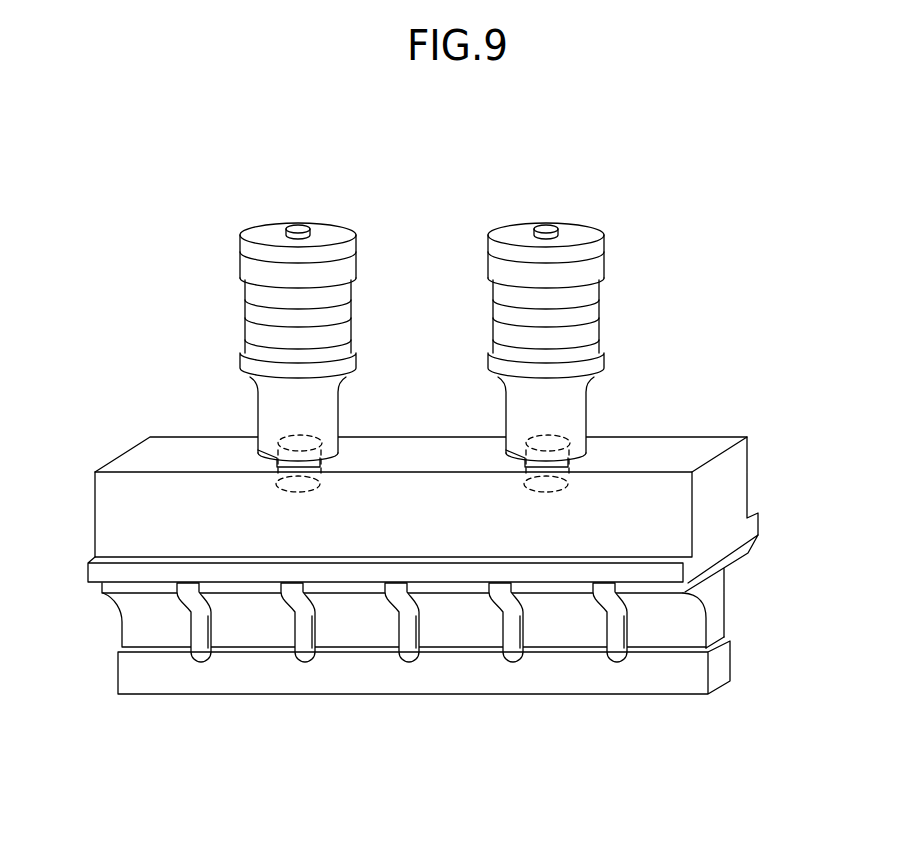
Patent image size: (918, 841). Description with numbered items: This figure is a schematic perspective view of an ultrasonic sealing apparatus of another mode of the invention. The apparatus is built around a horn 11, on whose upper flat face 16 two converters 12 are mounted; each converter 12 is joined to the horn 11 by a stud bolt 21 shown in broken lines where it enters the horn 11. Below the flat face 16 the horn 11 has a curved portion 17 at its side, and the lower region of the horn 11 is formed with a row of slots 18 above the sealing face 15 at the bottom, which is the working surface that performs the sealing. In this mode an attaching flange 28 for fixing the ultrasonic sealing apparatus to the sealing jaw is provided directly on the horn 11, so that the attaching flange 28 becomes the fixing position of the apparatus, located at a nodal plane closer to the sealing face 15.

The horn 11 is at (462, 465).
The converter 12 is at (392, 329).
The sealing face 15 is at (423, 694).
The flat face 16 is at (678, 437).
The curved portion 17 is at (736, 588).
The slot 18 is at (178, 645).
The stud bolt 21 is at (258, 445).
The attaching flange 28 is at (88, 570).